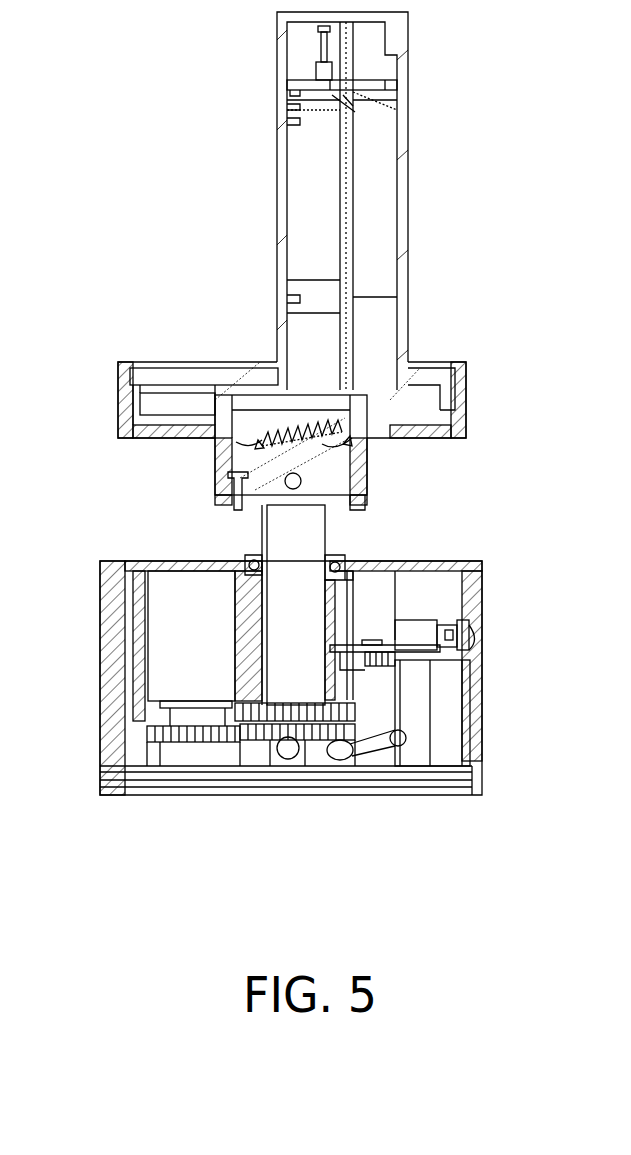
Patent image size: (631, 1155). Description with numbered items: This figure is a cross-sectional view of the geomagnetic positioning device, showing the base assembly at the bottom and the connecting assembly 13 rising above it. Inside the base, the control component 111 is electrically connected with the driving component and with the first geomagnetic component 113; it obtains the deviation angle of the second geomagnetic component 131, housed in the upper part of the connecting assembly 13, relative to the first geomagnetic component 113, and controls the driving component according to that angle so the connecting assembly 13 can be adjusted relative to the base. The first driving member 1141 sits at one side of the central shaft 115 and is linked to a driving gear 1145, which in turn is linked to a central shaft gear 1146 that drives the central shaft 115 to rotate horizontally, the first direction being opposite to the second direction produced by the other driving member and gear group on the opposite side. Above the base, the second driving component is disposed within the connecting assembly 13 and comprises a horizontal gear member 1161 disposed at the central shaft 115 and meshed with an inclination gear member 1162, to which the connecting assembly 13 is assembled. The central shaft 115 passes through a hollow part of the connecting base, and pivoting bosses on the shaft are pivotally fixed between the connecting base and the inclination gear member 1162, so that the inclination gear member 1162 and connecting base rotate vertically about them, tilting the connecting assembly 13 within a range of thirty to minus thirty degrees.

The connecting assembly 13 is at (232, 188).
The second geomagnetic component 131 is at (380, 78).
The horizontal gear member 1161 is at (360, 430).
The inclination gear member 1162 is at (302, 474).
The central shaft 115 is at (275, 533).
The first geomagnetic component 113 is at (372, 645).
The control component 111 is at (422, 650).
The first driving member 1141 is at (185, 638).
The driving gear 1145 is at (195, 730).
The central shaft gear 1146 is at (302, 705).